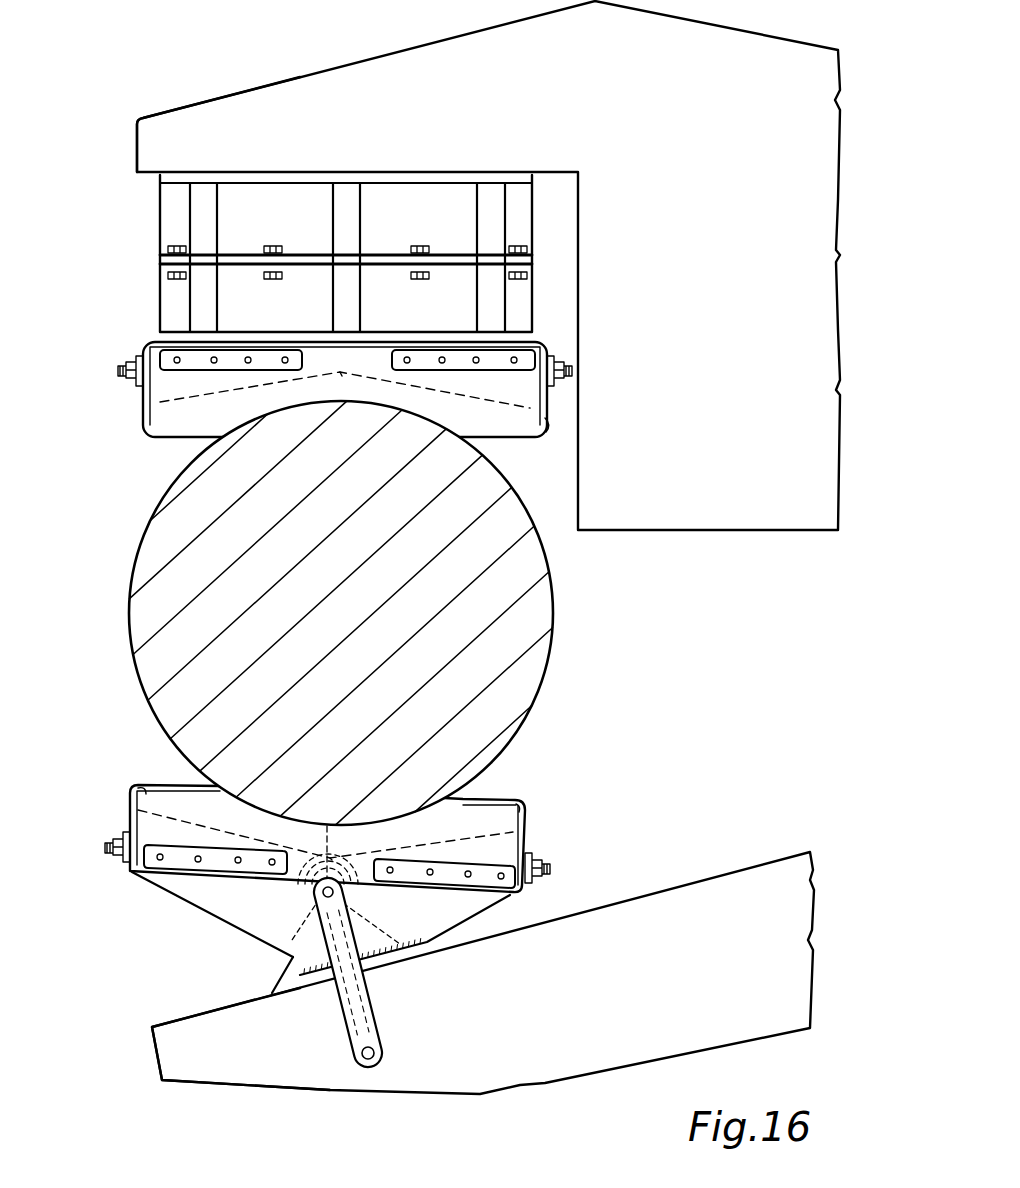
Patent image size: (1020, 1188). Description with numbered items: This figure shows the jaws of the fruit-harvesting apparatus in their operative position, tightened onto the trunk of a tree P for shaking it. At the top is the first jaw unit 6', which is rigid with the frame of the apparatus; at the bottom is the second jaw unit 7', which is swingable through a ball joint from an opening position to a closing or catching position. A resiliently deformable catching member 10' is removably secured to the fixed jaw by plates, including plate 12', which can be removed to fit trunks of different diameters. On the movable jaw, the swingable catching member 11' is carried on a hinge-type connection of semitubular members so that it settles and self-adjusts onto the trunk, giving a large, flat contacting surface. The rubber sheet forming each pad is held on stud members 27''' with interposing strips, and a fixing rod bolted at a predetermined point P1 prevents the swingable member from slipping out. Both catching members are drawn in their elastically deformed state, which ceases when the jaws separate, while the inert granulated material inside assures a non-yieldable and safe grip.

The first jaw unit 6' is at (218, 95).
The plate 12' is at (317, 253).
The resiliently deformable catching member 10' is at (322, 409).
The stud members 27''' is at (366, 622).
The tree P is at (532, 626).
The swingable catching member 11' is at (311, 812).
The fixing point P1 is at (376, 1054).
The second jaw unit 7' is at (225, 1071).